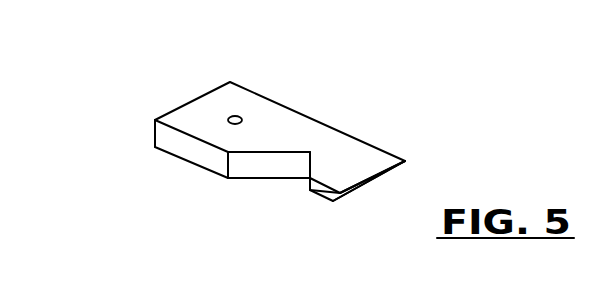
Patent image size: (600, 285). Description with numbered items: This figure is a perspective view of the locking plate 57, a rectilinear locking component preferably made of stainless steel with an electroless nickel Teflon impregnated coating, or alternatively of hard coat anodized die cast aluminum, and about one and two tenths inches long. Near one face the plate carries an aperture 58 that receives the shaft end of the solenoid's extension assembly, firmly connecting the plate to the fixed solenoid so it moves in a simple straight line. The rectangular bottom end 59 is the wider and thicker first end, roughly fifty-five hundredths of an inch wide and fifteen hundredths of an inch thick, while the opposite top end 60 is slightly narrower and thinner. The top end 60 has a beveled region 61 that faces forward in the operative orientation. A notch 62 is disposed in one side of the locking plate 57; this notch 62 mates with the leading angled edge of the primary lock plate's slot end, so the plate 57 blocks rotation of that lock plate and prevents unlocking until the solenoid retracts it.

The locking plate 57 is at (300, 103).
The aperture 58 is at (229, 117).
The bottom end 59 is at (138, 126).
The top end 60 is at (357, 191).
The beveled region 61 is at (381, 181).
The notch 62 is at (261, 177).